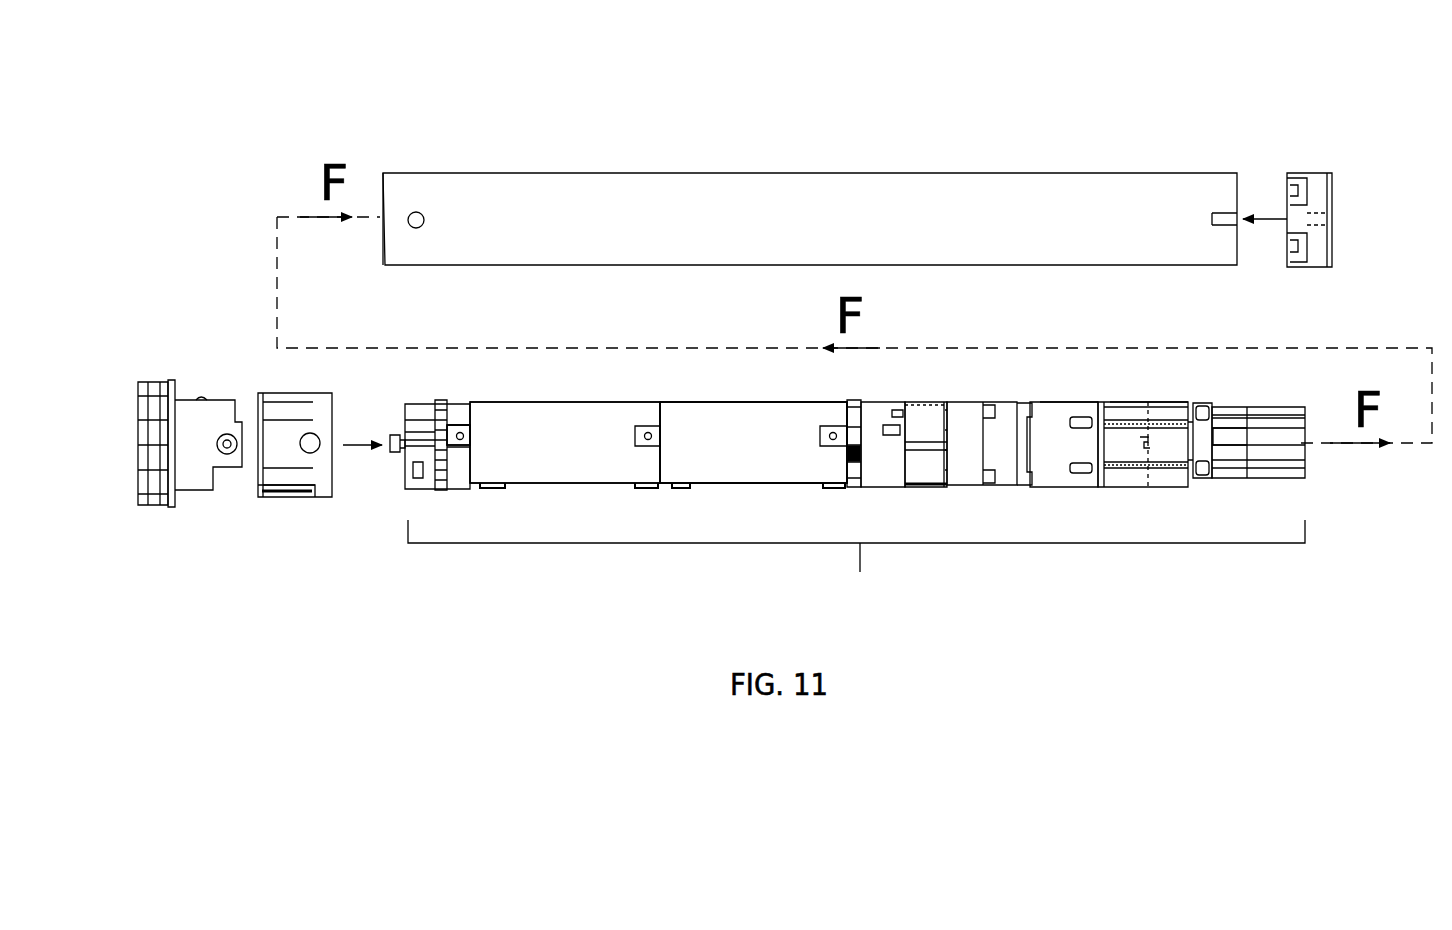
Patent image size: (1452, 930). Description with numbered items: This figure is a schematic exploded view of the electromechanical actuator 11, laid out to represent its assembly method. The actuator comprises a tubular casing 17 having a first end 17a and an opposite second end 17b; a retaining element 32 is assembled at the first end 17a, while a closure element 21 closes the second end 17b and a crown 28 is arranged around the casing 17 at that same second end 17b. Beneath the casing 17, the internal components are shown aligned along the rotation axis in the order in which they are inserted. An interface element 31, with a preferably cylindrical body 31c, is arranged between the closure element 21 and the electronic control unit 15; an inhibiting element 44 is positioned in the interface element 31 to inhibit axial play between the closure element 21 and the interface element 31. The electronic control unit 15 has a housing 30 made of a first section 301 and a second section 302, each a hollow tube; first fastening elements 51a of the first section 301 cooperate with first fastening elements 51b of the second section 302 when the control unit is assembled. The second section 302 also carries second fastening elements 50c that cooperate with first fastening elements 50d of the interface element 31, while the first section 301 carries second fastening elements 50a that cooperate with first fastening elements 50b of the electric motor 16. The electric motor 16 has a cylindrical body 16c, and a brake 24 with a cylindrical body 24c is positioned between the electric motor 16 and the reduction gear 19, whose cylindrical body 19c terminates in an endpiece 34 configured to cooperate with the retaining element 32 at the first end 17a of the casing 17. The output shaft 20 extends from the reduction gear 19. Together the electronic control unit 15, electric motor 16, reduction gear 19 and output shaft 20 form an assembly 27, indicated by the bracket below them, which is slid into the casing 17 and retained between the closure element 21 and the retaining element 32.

The electromechanical actuator 11 is at (260, 170).
The casing 17 is at (598, 212).
The first end of the casing 17a is at (1238, 176).
The second end of the casing 17b is at (383, 178).
The retaining element 32 is at (1322, 193).
The closure element 21 is at (193, 478).
The crown 28 is at (296, 490).
The inhibiting element 44 is at (393, 453).
The interface element 31 is at (327, 393).
The body of the interface element 31c is at (450, 402).
The housing 30 is at (707, 372).
The first section of the housing 301 is at (535, 425).
The second section of the housing 302 is at (733, 425).
The electronic control unit 15 is at (711, 460).
The electric motor 16 is at (912, 416).
The body of the electric motor 16c is at (895, 410).
The brake 24 is at (1022, 409).
The body of the brake 24c is at (1048, 400).
The reduction gear 19 is at (1154, 416).
The body of the reduction gear 19c is at (1140, 400).
The endpiece 34 is at (1198, 403).
The output shaft 20 is at (1291, 457).
The assembly 27 is at (856, 582).
The second fastening elements of the first section 50a is at (826, 440).
The first fastening elements of the electric motor 50b is at (841, 320).
The second fastening elements of the second section 50c is at (309, 341).
The first fastening elements of the interface element 50d is at (309, 341).
The first fastening elements of the first section 51a is at (642, 436).
The first fastening elements of the second section 51b is at (632, 360).